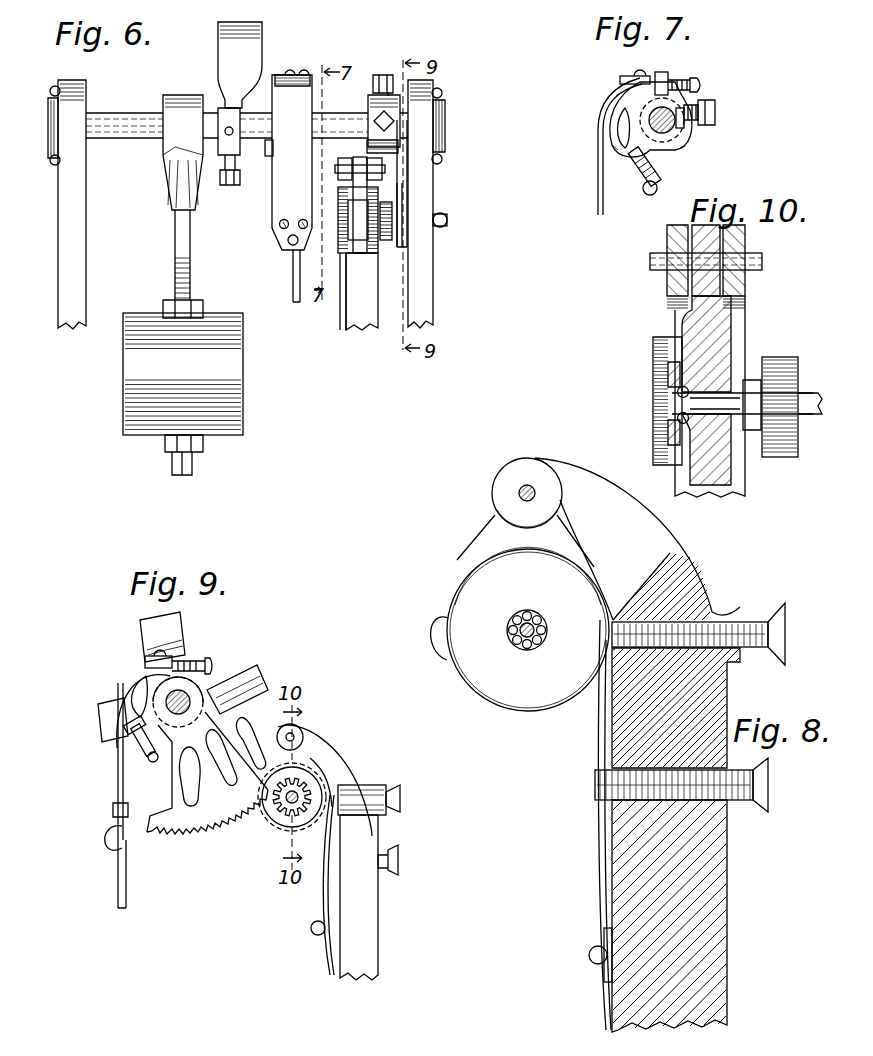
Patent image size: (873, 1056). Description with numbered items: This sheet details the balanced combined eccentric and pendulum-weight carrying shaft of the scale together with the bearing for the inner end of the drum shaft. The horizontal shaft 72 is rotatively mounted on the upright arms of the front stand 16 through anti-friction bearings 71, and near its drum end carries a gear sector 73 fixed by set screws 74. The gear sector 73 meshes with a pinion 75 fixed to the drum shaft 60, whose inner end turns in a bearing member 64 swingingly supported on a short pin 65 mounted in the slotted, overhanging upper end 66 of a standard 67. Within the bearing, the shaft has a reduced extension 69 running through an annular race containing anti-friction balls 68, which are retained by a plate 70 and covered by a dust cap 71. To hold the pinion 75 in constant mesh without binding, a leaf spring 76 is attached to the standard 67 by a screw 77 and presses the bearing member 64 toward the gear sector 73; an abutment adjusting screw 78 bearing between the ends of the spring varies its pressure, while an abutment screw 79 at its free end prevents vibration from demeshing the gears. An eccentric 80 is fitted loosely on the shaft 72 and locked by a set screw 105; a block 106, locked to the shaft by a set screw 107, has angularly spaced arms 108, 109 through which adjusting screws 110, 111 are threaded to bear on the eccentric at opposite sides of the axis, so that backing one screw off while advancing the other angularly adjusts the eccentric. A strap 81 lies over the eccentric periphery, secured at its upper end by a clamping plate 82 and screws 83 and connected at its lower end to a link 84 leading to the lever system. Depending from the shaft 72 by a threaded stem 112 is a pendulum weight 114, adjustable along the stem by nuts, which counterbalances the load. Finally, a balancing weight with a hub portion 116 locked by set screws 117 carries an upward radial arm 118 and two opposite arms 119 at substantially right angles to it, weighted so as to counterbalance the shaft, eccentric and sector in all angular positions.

In FIG. 6, the front stand 16 is at (66, 212).
In FIG. 6, the drum shaft 60 is at (447, 220).
In FIG. 10, the drum shaft 60 is at (808, 416).
In FIG. 6, the bearing member 64 is at (372, 250).
In FIG. 8, the bearing member 64 is at (470, 668).
In FIG. 9, the bearing member 64 is at (316, 790).
In FIG. 6, the short pin or shaft 65 is at (338, 169).
In FIG. 10, the short pin or shaft 65 is at (762, 262).
In FIG. 8, the short pin or shaft 65 is at (519, 491).
In FIG. 9, the short pin or shaft 65 is at (294, 735).
In FIG. 6, the slotted overhanging upper end 66 is at (348, 160).
In FIG. 10, the slotted overhanging upper end 66 is at (668, 232).
In FIG. 8, the slotted overhanging upper end 66 is at (600, 492).
In FIG. 9, the slotted overhanging upper end 66 is at (332, 742).
In FIG. 6, the standard 67 is at (362, 330).
In FIG. 8, the standard 67 is at (722, 887).
In FIG. 9, the standard 67 is at (370, 900).
In FIG. 10, the anti-friction balls 68 is at (678, 420).
In FIG. 8, the anti-friction balls 68 is at (528, 613).
In FIG. 10, the reduced extensions 69 is at (678, 392).
In FIG. 8, the reduced extensions 69 is at (524, 644).
In FIG. 10, the plates 70 is at (668, 370).
In FIG. 6, the dust caps 71 is at (51, 128).
In FIG. 10, the dust caps 71 is at (656, 338).
In FIG. 6, the horizontal shaft 72 is at (150, 125).
In FIG. 7, the horizontal shaft 72 is at (648, 118).
In FIG. 9, the horizontal shaft 72 is at (186, 698).
In FIG. 6, the gear sector 73 is at (400, 182).
In FIG. 9, the gear sector 73 is at (216, 820).
In FIG. 6, the set screws 74 is at (385, 73).
In FIG. 6, the pinion 75 is at (386, 221).
In FIG. 10, the pinion 75 is at (783, 357).
In FIG. 9, the pinion 75 is at (283, 808).
In FIG. 6, the leaf spring 76 is at (356, 306).
In FIG. 8, the leaf spring 76 is at (598, 742).
In FIG. 9, the leaf spring 76 is at (325, 870).
In FIG. 8, the screw 77 is at (590, 955).
In FIG. 9, the screw 77 is at (313, 933).
In FIG. 8, the abutment adjusting screw 78 is at (700, 798).
In FIG. 9, the abutment adjusting screw 78 is at (400, 860).
In FIG. 8, the abutment screw 79 is at (710, 622).
In FIG. 9, the abutment screw 79 is at (402, 798).
In FIG. 7, the eccentric 80 is at (612, 155).
In FIG. 6, the strap 81 is at (291, 200).
In FIG. 7, the strap 81 is at (598, 158).
In FIG. 9, the strap 81 is at (120, 760).
In FIG. 6, the clamping plate 82 is at (296, 56).
In FIG. 7, the clamping plate 82 is at (635, 82).
In FIG. 9, the clamping plate 82 is at (145, 663).
In FIG. 6, the screws 83 is at (300, 74).
In FIG. 7, the screws 83 is at (640, 76).
In FIG. 9, the screws 83 is at (150, 656).
In FIG. 6, the link 84 is at (292, 268).
In FIG. 9, the link 84 is at (118, 876).
In FIG. 7, the set screw 105 is at (694, 126).
In FIG. 6, the block 106 is at (270, 157).
In FIG. 7, the block 106 is at (690, 140).
In FIG. 7, the set screw 107 is at (715, 112).
In FIG. 7, the arm 108 is at (672, 84).
In FIG. 7, the arm 109 is at (660, 158).
In FIG. 7, the adjusting screw 110 is at (698, 86).
In FIG. 9, the adjusting screw 110 is at (206, 665).
In FIG. 7, the adjusting screw 111 is at (648, 190).
In FIG. 9, the adjusting screw 111 is at (150, 764).
In FIG. 6, the stem 112 is at (176, 226).
In FIG. 6, the pendulum weight 114 is at (132, 358).
In FIG. 6, the hub portion 116 is at (228, 108).
In FIG. 6, the set screws 117 is at (228, 186).
In FIG. 6, the radial arm 118 is at (258, 42).
In FIG. 9, the radial arm 118 is at (182, 632).
In FIG. 9, the radial arms 119 is at (262, 678).